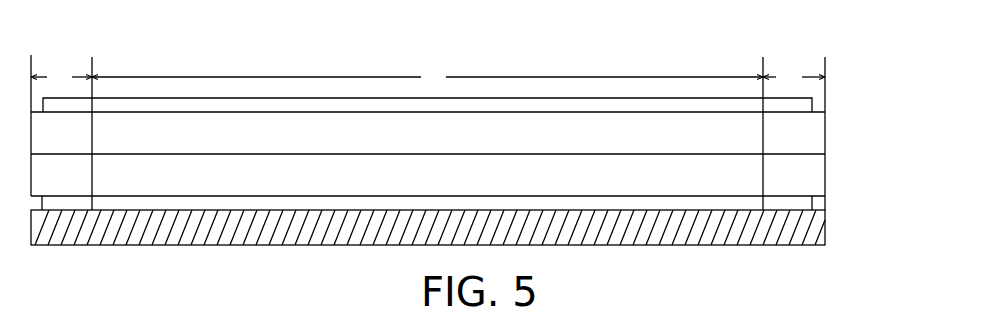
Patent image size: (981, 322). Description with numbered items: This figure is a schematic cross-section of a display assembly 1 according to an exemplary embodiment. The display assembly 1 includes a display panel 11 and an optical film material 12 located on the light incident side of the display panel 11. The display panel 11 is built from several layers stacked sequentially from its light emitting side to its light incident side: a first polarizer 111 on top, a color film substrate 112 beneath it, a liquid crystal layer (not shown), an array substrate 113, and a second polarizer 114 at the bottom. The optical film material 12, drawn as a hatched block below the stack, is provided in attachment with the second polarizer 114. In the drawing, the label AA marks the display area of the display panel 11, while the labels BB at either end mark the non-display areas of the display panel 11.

The display assembly 1 is at (836, 14).
The display panel 11 is at (881, 76).
The first polarizer 111 is at (812, 105).
The color film substrate 112 is at (812, 129).
The array substrate 113 is at (812, 165).
The second polarizer 114 is at (812, 202).
The optical film material 12 is at (825, 230).